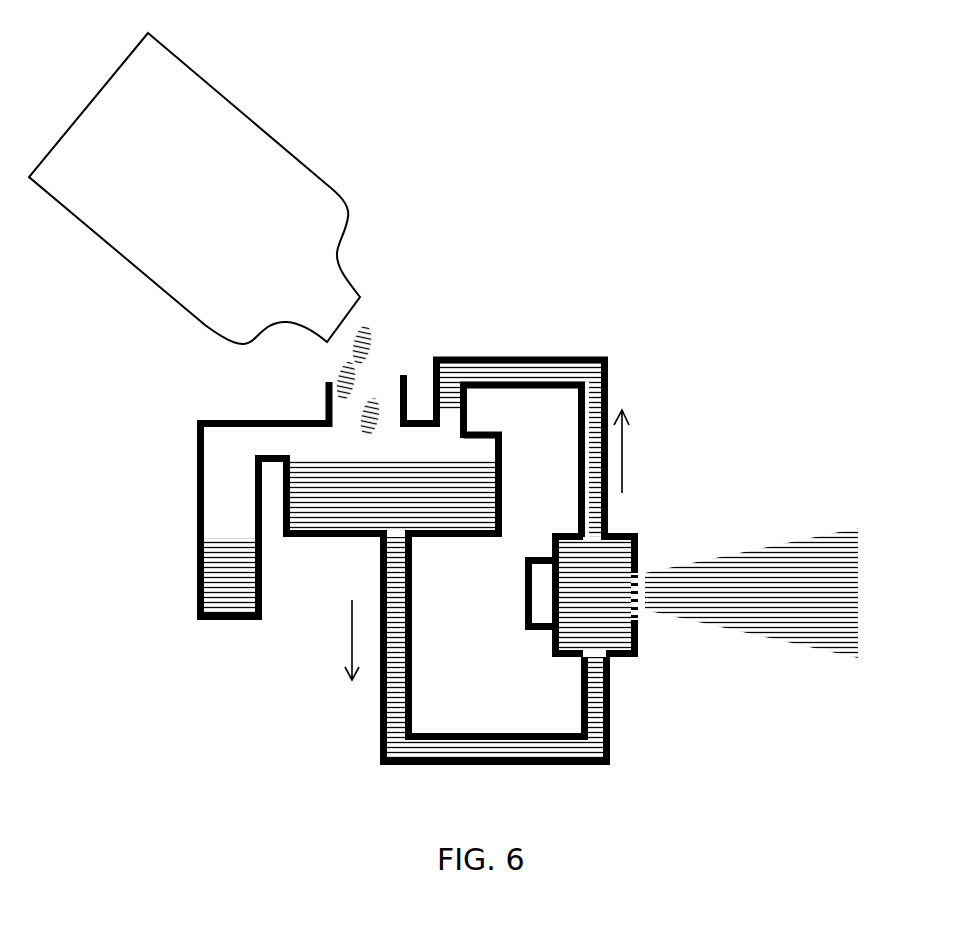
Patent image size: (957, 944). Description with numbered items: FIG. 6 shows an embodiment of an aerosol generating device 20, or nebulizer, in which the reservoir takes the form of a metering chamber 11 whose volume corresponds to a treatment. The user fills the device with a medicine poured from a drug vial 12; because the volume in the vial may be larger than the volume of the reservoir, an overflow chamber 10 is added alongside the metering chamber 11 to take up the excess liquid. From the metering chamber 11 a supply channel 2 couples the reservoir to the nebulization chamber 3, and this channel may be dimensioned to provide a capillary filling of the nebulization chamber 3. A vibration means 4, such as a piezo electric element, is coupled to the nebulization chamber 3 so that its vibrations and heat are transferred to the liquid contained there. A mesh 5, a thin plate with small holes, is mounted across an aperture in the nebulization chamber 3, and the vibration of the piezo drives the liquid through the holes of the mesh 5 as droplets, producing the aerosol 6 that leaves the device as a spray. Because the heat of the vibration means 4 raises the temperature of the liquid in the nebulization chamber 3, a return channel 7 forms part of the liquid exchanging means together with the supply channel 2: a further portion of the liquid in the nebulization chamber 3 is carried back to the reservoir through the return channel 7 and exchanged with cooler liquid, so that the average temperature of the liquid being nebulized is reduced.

The supply channel 2 is at (393, 715).
The nebulization chamber 3 is at (637, 647).
The vibration means 4 is at (538, 585).
The mesh 5 is at (635, 593).
The aerosol 6 is at (833, 635).
The return channel 7 is at (593, 400).
The overflow chamber 10 is at (197, 570).
The metering chamber 11 is at (338, 492).
The drug vial 12 is at (170, 280).
The aerosol generating device 20 is at (496, 491).